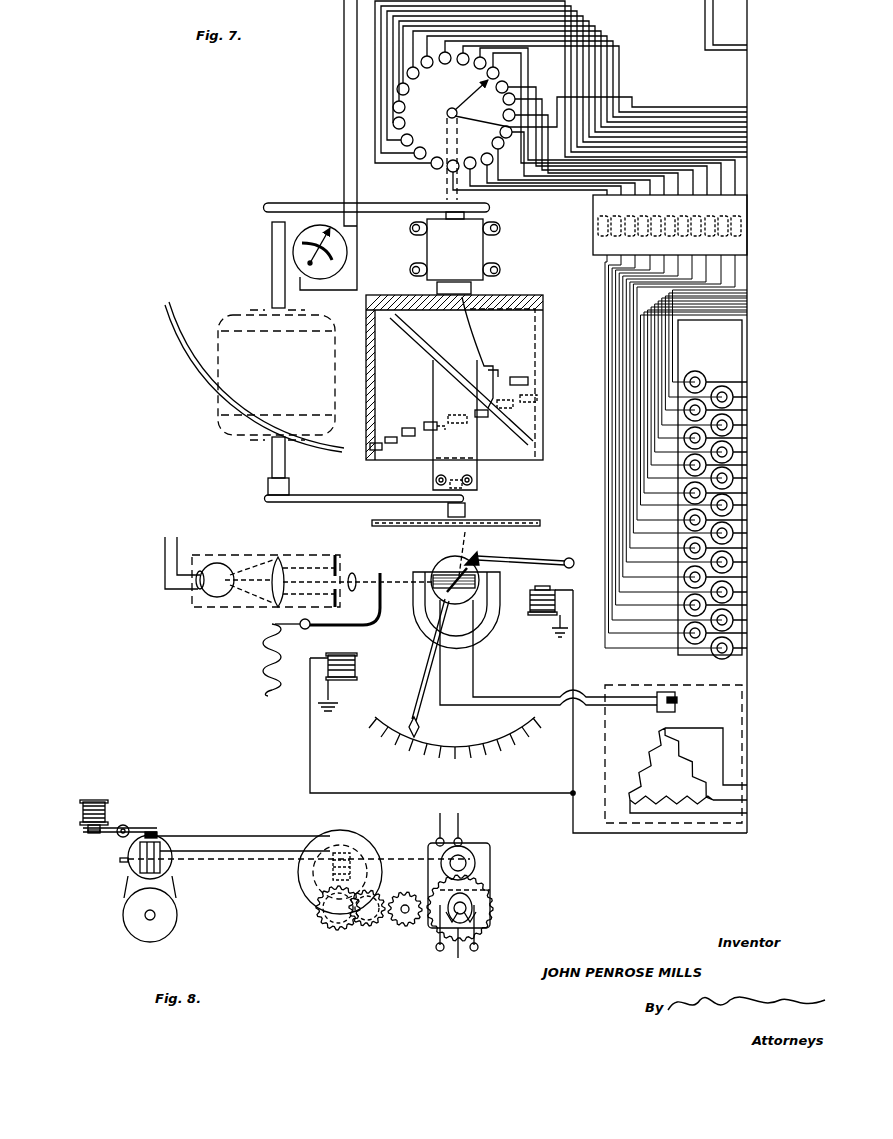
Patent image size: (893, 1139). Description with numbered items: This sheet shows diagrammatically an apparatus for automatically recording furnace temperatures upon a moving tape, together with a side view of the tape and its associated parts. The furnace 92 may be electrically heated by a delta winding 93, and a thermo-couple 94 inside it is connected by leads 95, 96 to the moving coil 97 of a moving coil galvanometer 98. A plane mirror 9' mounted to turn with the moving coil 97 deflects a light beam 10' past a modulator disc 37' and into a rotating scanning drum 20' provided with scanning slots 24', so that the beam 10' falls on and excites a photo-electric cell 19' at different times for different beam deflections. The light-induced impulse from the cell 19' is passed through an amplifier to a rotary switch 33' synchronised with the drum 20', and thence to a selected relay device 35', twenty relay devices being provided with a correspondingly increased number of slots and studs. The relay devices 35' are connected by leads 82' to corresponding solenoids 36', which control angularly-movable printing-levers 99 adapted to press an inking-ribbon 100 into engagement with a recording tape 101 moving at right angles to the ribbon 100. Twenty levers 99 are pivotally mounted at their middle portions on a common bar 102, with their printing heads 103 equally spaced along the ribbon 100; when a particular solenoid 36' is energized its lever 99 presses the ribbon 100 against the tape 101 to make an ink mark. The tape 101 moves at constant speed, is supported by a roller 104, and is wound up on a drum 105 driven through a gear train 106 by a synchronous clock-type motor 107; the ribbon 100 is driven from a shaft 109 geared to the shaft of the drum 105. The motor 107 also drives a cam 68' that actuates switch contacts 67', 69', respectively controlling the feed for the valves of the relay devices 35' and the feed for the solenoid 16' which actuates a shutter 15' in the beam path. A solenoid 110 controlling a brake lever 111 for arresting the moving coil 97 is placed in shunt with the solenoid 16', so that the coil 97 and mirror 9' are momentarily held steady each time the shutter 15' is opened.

In FIG. 7, the rotary switch 33' is at (561, 100).
In FIG. 7, the relay device 35' is at (670, 225).
In FIG. 7, the leads 82' is at (662, 455).
In FIG. 7, the solenoid 36' is at (697, 506).
In FIG. 8, the solenoid 36' is at (102, 802).
In FIG. 7, the photo-electric cell 19' is at (294, 252).
In FIG. 7, the rotating scanning drum 20' is at (436, 406).
In FIG. 7, the scanning slots 24' is at (474, 400).
In FIG. 7, the modulator disc 37' is at (458, 514).
In FIG. 7, the light beam 10' is at (353, 585).
In FIG. 7, the shutter 15' is at (327, 657).
In FIG. 7, the solenoid 16' is at (351, 682).
In FIG. 7, the moving coil 97 is at (440, 565).
In FIG. 7, the plane mirror 9' is at (444, 634).
In FIG. 7, the brake lever 111 is at (535, 556).
In FIG. 7, the solenoid 110 is at (530, 612).
In FIG. 7, the lead 95 is at (512, 697).
In FIG. 7, the lead 96 is at (500, 706).
In FIG. 7, the moving coil galvanometer 98 is at (408, 683).
In FIG. 7, the thermo-couple 94 is at (680, 700).
In FIG. 7, the delta winding 93 is at (648, 772).
In FIG. 7, the furnace 92 is at (744, 750).
In FIG. 8, the printing-lever 99 is at (141, 829).
In FIG. 8, the common bar 102 is at (118, 834).
In FIG. 8, the printing head 103 is at (157, 835).
In FIG. 8, the inking-ribbon 100 is at (152, 850).
In FIG. 8, the roller 104 is at (165, 869).
In FIG. 8, the shaft 109 is at (262, 862).
In FIG. 8, the recording tape 101 is at (268, 836).
In FIG. 8, the drum 105 is at (302, 896).
In FIG. 8, the gear train 106 is at (393, 927).
In FIG. 8, the cam 68' is at (480, 908).
In FIG. 8, the synchronous clock-type motor 107 is at (481, 850).
In FIG. 8, the switch contact 69' is at (486, 931).
In FIG. 8, the switch contact 67' is at (445, 943).